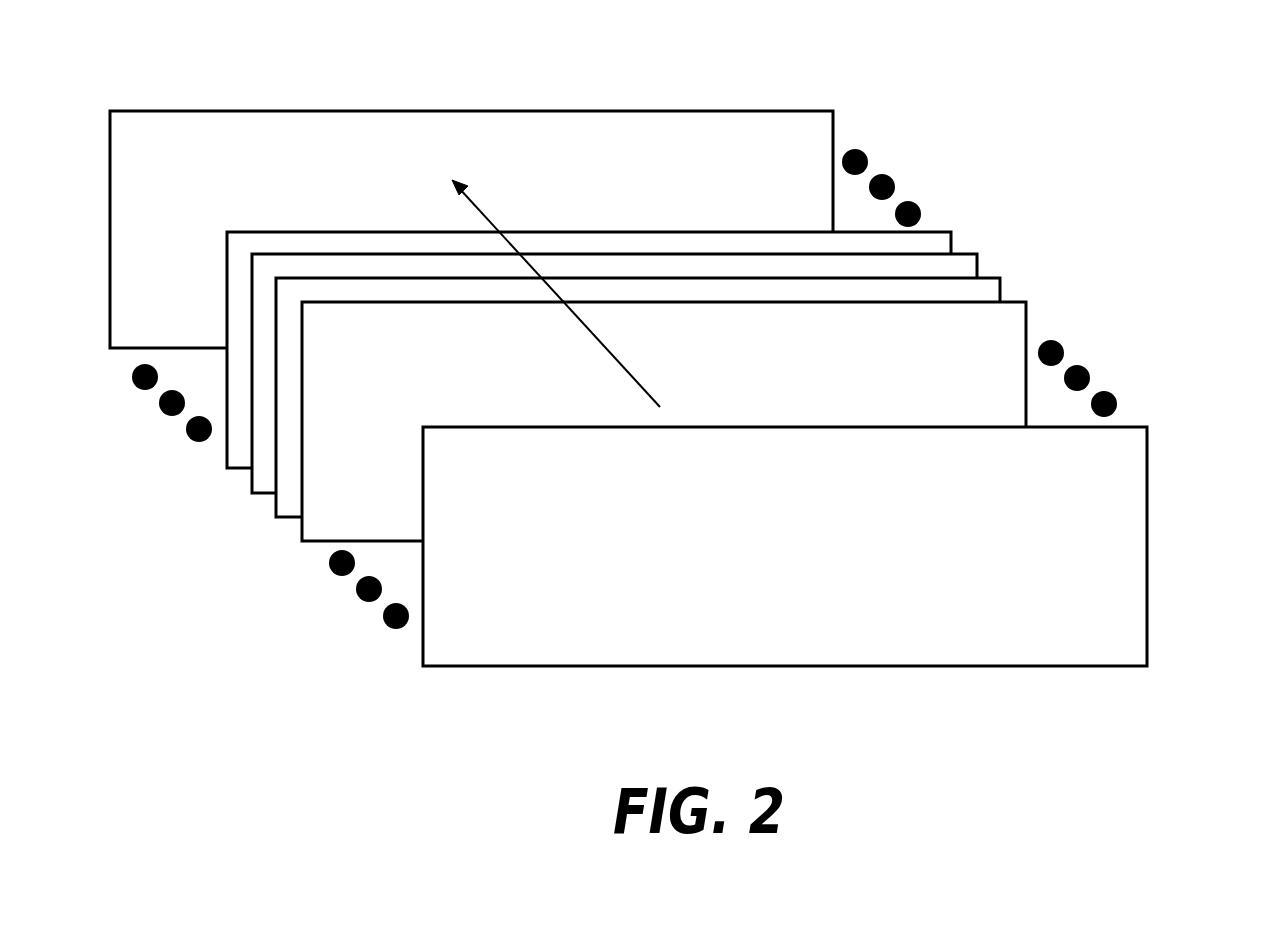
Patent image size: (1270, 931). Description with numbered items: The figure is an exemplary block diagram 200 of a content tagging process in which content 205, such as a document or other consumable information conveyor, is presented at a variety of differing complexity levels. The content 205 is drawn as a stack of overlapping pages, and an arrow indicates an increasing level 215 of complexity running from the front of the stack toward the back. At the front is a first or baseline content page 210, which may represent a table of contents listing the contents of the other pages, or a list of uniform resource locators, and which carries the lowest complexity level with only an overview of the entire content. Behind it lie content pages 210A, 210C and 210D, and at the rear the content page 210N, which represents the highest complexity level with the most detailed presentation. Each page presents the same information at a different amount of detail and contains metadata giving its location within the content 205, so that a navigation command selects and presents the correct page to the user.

The block diagram 200 is at (1212, 63).
The content 205 is at (612, 111).
The content page 210N is at (835, 137).
The content page 210D is at (953, 241).
The content page 210C is at (990, 271).
The content page 210A is at (1028, 327).
The content page 210 is at (1150, 455).
The increasing level of complexity 215 is at (494, 225).